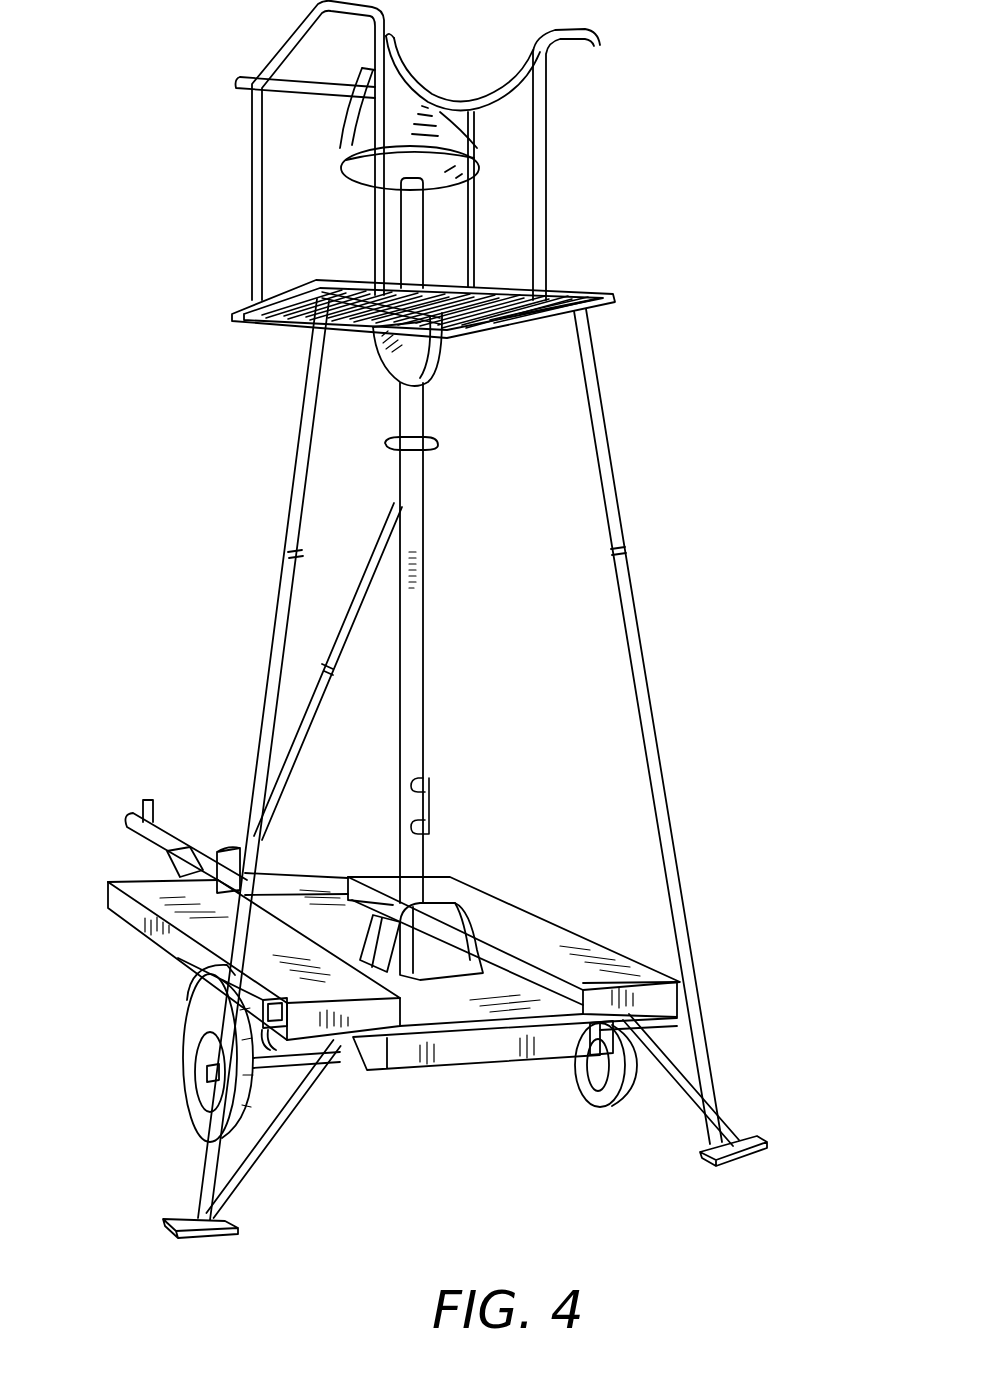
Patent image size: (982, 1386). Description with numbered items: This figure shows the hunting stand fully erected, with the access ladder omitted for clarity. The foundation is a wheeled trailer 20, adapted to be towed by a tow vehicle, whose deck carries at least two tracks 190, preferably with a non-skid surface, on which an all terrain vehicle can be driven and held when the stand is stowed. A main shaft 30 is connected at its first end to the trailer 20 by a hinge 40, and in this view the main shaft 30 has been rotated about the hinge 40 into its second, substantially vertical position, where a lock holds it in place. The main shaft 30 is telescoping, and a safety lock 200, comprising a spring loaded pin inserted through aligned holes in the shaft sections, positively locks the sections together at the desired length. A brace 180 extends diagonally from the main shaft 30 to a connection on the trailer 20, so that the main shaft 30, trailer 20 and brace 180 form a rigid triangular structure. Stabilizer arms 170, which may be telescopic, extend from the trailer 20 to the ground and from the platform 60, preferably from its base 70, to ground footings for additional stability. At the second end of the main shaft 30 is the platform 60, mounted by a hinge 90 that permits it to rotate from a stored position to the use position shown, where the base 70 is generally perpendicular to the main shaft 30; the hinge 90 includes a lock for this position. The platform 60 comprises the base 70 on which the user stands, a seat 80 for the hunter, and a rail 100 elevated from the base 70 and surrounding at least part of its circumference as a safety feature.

The wheeled trailer 20 is at (177, 946).
The main shaft 30 is at (417, 660).
The hinge 40 is at (470, 898).
The platform 60 is at (188, 218).
The base 70 is at (607, 292).
The seat 80 is at (341, 138).
The hinge 90 is at (437, 357).
The rail 100 is at (600, 45).
The stabilizer arms 170 is at (277, 637).
The brace 180 is at (320, 697).
The tracks 190 is at (394, 958).
The safety lock 200 is at (427, 787).